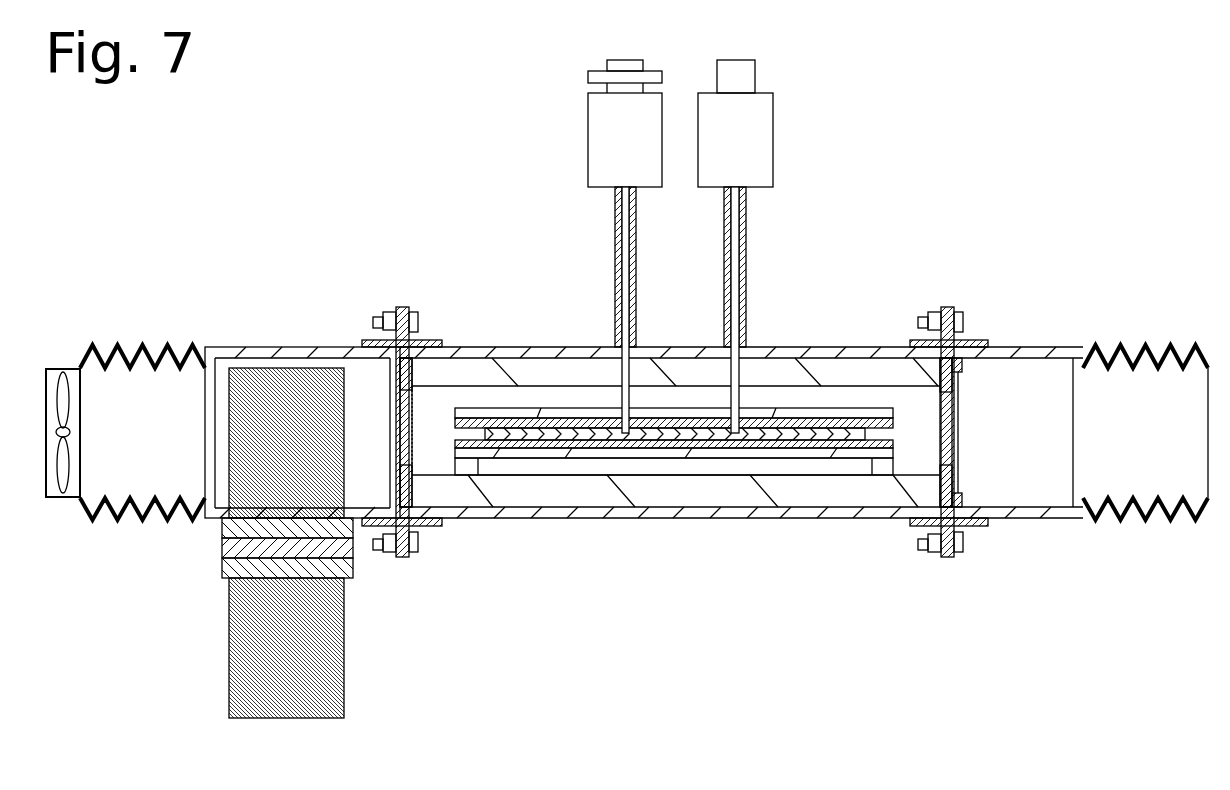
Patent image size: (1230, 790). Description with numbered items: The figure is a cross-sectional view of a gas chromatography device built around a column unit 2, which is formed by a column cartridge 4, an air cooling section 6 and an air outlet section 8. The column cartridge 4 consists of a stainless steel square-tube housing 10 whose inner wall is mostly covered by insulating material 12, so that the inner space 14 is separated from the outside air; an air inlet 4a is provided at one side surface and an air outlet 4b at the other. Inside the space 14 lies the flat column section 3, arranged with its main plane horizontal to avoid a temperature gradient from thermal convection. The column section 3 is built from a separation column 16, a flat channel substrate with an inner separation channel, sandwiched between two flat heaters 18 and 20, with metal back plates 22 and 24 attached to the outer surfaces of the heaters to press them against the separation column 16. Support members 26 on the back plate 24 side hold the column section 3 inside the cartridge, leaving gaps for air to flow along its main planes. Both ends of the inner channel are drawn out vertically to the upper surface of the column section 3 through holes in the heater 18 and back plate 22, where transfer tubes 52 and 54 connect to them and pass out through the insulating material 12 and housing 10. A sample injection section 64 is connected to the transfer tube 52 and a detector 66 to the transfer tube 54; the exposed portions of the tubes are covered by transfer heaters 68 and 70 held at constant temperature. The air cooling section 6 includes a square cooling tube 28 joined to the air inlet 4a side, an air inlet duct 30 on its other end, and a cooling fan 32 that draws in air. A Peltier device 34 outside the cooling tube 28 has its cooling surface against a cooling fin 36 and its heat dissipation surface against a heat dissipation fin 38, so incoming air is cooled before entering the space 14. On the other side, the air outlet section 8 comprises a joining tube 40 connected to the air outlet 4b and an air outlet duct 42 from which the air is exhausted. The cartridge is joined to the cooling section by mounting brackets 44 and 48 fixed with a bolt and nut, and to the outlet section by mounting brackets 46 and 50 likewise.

The column unit 2 is at (627, 389).
The column section 3 is at (685, 426).
The column cartridge 4 is at (719, 322).
The air inlet 4a is at (408, 432).
The air outlet 4b is at (945, 427).
The air cooling section 6 is at (223, 487).
The air outlet section 8 is at (1111, 388).
The housing 10 is at (525, 517).
The insulating material 12 is at (535, 372).
The space 14 is at (447, 393).
The separation column 16 is at (572, 430).
The heater 18 is at (613, 425).
The heater 20 is at (692, 450).
The back plate 22 is at (765, 413).
The back plate 24 is at (795, 455).
The support member 26 is at (883, 467).
The cooling tube 28 is at (253, 348).
The air inlet duct 30 is at (142, 342).
The cooling fan 32 is at (57, 366).
The Peltier device 34 is at (248, 562).
The cooling fin 36 is at (267, 498).
The heat dissipation fin 38 is at (248, 685).
The joining tube 40 is at (1015, 357).
The air outlet duct 42 is at (1150, 345).
The mounting bracket 44 is at (408, 310).
The mounting bracket 46 is at (943, 310).
The mounting bracket 48 is at (395, 310).
The mounting bracket 50 is at (957, 310).
The transfer tube 52 is at (622, 250).
The transfer tube 54 is at (739, 240).
The sample injection section 64 is at (588, 155).
The detector 66 is at (773, 147).
The transfer heater 68 is at (617, 268).
The transfer heater 70 is at (747, 262).